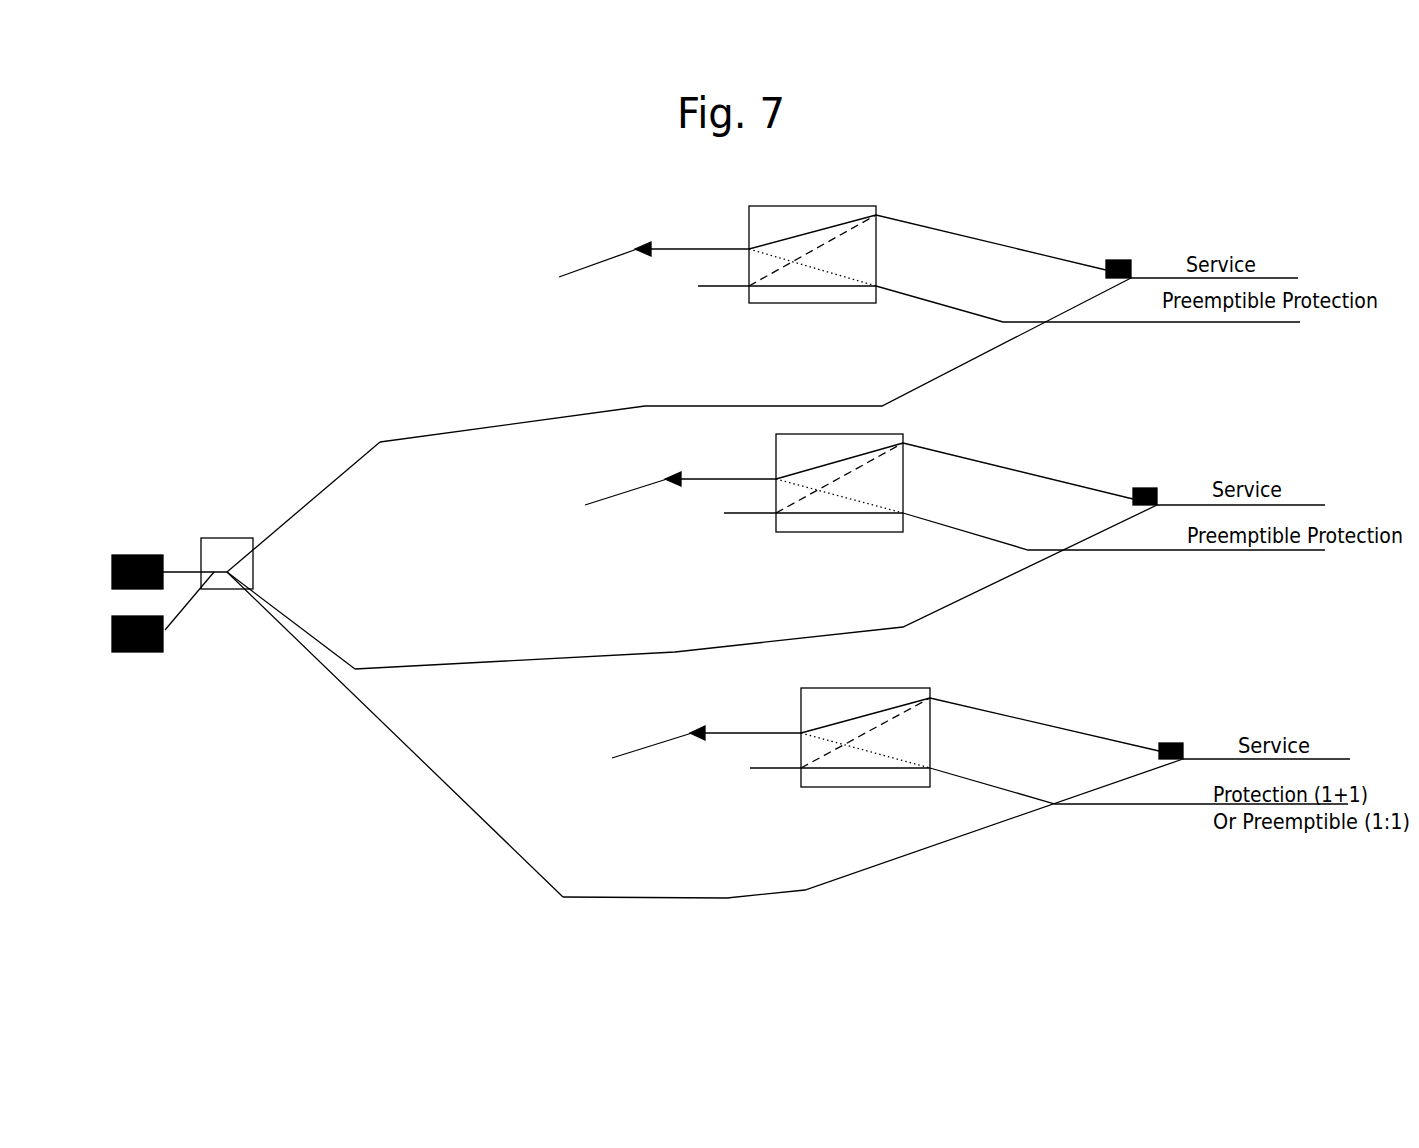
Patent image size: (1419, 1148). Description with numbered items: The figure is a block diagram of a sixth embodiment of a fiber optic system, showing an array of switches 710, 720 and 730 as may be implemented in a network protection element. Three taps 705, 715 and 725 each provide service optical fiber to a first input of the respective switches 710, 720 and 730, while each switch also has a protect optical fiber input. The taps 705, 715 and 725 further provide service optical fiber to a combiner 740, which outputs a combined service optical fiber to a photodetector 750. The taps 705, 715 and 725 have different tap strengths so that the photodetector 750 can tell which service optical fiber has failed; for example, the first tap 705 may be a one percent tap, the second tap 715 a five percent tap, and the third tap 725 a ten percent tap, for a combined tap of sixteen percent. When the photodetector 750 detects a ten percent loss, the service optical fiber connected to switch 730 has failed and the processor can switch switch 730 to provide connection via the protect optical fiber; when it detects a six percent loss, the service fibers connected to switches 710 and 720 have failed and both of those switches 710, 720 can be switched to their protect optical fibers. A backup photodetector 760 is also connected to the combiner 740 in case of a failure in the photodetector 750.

The tap 705 is at (1135, 262).
The switch 710 is at (843, 205).
The tap 715 is at (1158, 490).
The switch 720 is at (882, 436).
The tap 725 is at (1192, 752).
The switch 730 is at (896, 688).
The combiner 740 is at (253, 572).
The photodetector 750 is at (130, 553).
The backup photodetector 760 is at (131, 656).